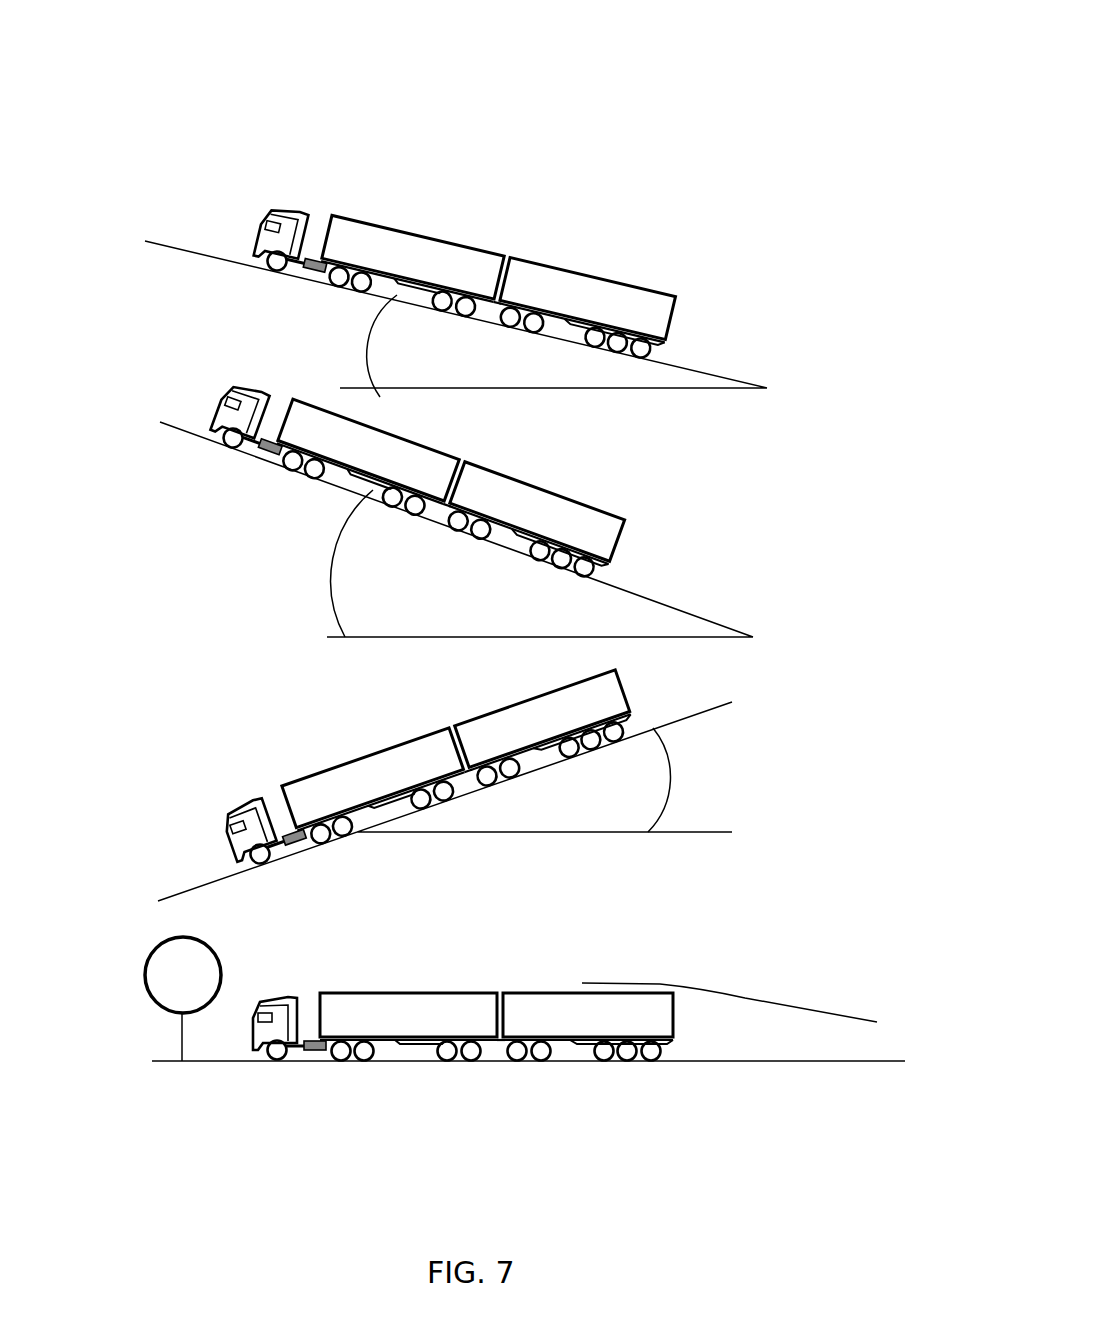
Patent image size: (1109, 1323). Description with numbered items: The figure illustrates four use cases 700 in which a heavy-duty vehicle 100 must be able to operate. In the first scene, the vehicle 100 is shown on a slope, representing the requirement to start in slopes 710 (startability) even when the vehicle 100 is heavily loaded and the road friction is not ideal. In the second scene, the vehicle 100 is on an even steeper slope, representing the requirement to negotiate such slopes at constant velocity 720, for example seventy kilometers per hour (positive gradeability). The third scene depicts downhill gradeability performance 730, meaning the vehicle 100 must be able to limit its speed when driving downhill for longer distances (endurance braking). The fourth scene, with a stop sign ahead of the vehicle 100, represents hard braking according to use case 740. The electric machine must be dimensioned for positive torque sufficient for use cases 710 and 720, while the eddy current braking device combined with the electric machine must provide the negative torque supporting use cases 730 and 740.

The use cases 700 is at (765, 95).
The heavy-duty vehicle 100 is at (437, 213).
The start in slopes use case 710 is at (405, 319).
The constant velocity in steeper slopes use case 720 is at (398, 529).
The downhill gradeability performance use case 730 is at (387, 801).
The hard braking use case 740 is at (474, 999).